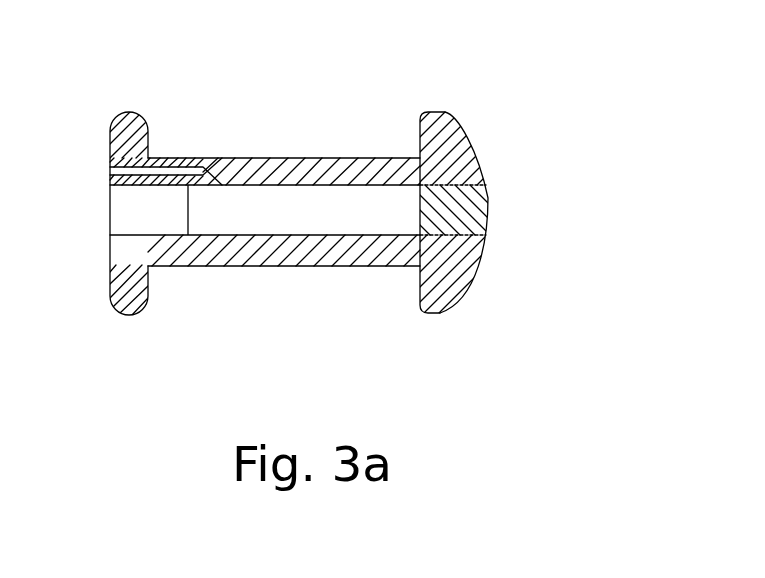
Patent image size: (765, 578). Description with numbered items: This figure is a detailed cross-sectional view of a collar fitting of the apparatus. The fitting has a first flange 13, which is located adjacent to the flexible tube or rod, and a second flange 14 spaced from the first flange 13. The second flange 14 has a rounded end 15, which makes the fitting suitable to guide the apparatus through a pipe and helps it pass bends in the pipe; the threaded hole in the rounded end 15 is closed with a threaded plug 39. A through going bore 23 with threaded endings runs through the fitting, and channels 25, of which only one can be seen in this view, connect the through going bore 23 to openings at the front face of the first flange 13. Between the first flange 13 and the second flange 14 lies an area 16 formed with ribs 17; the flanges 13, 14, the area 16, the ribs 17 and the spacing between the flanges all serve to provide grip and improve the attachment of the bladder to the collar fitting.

The first flange 13 is at (130, 110).
The second flange 14 is at (448, 112).
The rounded end 15 is at (480, 153).
The area formed with ribs 16 is at (288, 267).
The ribs 17 is at (245, 267).
The through going bore 23 is at (132, 210).
The channels 25 is at (168, 165).
The threaded plug 39 is at (489, 198).